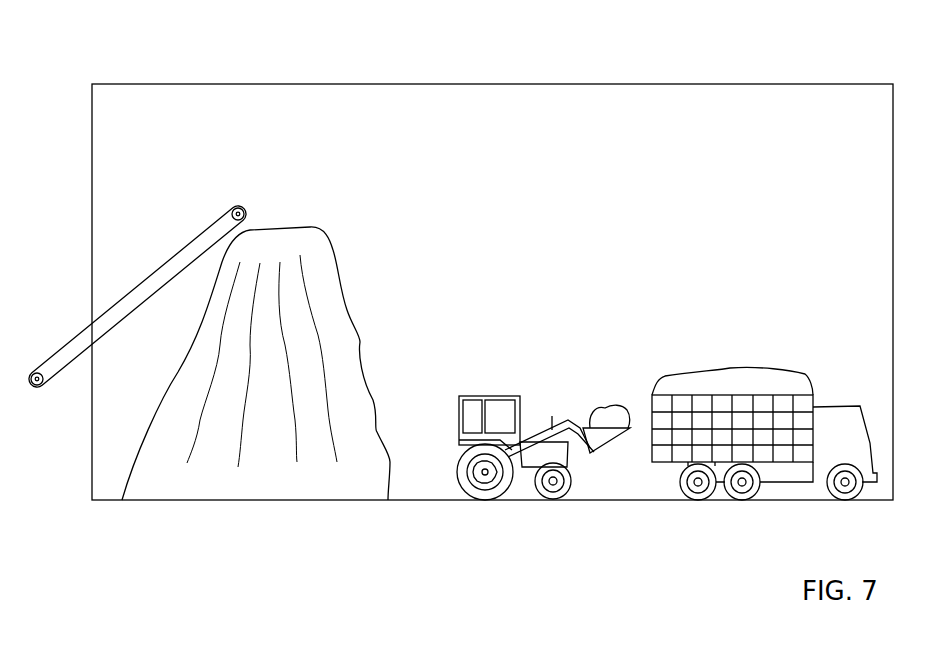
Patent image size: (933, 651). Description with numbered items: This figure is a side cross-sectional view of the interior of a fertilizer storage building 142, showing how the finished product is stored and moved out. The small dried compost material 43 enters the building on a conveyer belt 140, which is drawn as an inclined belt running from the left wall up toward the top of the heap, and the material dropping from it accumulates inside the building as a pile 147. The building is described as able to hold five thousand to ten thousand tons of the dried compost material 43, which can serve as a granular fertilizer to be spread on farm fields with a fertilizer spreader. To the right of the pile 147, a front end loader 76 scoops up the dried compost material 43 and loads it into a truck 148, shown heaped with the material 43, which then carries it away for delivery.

The fertilizer storage building 142 is at (403, 78).
The conveyer belt 140 is at (60, 346).
The small dried compost material 43 is at (340, 277).
The pile 147 is at (360, 343).
The front end loader 76 is at (492, 396).
The truck 148 is at (835, 406).